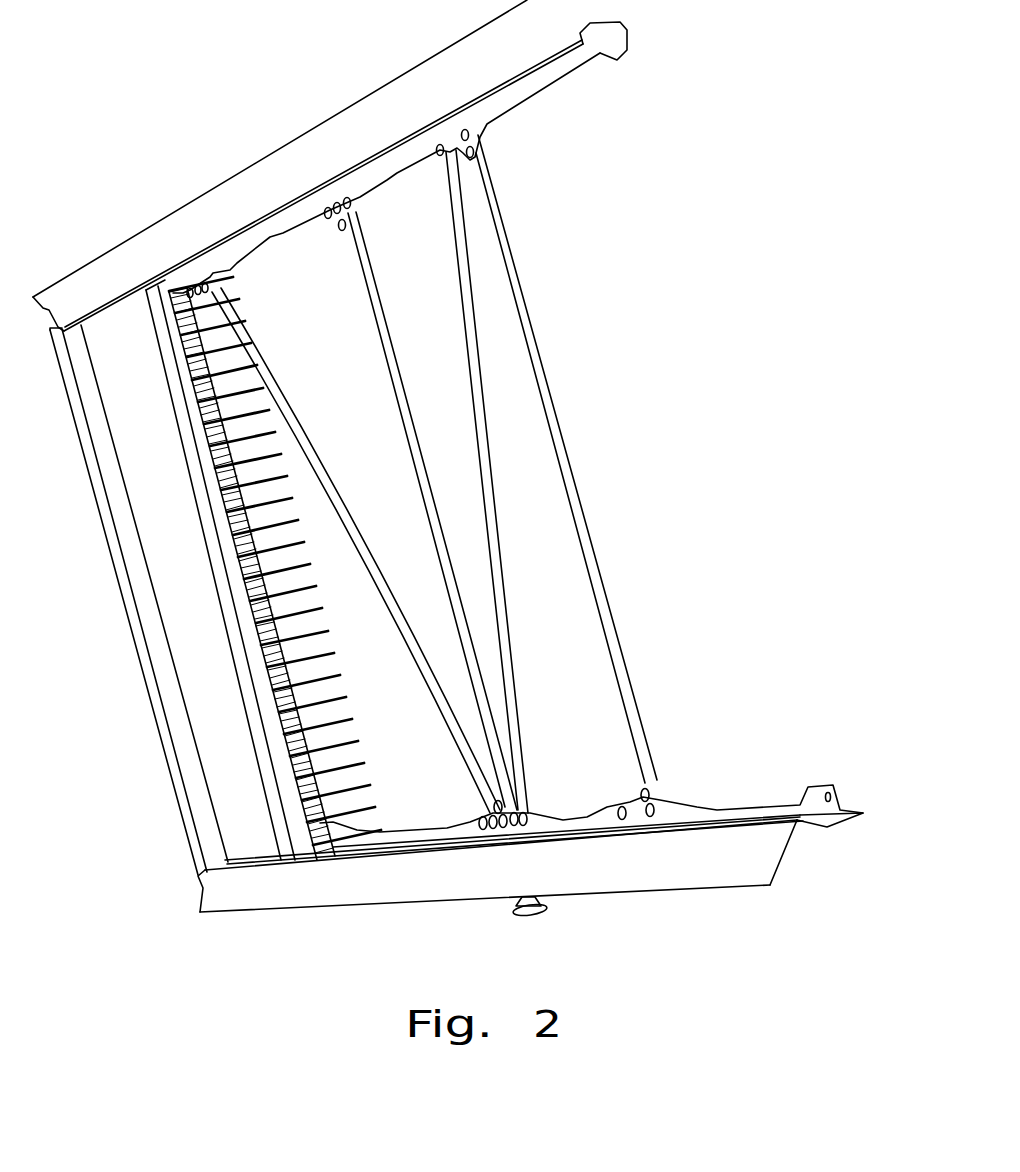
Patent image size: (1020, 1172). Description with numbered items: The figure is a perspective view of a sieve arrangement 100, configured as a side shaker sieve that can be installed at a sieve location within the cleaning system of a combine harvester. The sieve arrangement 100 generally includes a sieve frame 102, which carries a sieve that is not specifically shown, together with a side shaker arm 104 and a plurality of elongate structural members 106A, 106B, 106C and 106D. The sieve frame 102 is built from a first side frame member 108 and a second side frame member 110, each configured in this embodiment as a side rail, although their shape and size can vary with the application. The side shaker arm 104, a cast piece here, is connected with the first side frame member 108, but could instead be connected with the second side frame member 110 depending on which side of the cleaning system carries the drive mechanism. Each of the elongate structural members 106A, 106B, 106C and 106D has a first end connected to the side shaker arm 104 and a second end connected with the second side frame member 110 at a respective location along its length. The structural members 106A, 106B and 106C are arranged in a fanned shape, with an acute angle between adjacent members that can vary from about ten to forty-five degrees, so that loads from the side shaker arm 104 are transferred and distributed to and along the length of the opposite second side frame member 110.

The sieve arrangement 100 is at (448, 479).
The sieve frame 102 is at (448, 437).
The side shaker arm 104 is at (535, 915).
The elongate structural member 106A is at (302, 448).
The elongate structural member 106B is at (380, 310).
The elongate structural member 106C is at (512, 682).
The elongate structural member 106D is at (575, 475).
The first side frame member 108 is at (530, 885).
The second side frame member 110 is at (372, 94).